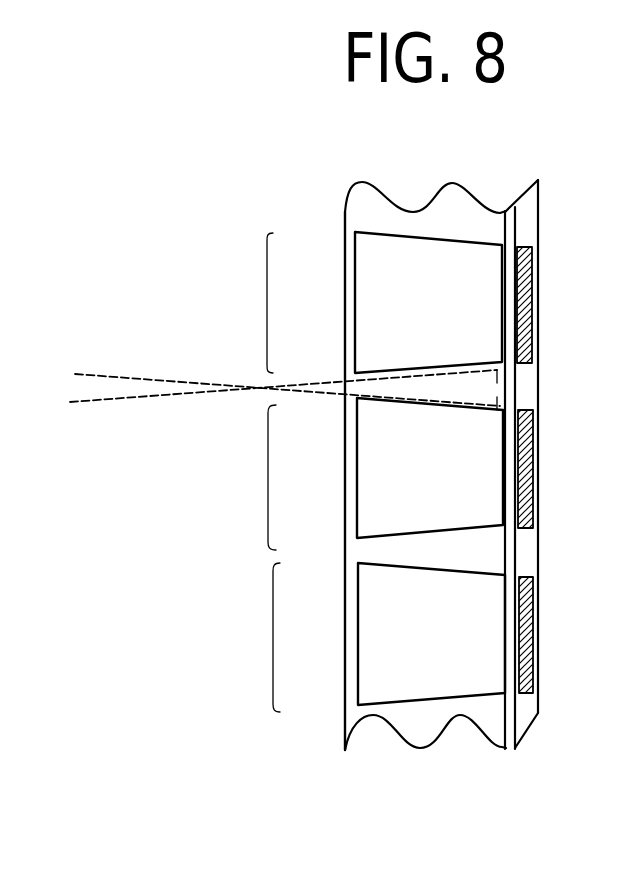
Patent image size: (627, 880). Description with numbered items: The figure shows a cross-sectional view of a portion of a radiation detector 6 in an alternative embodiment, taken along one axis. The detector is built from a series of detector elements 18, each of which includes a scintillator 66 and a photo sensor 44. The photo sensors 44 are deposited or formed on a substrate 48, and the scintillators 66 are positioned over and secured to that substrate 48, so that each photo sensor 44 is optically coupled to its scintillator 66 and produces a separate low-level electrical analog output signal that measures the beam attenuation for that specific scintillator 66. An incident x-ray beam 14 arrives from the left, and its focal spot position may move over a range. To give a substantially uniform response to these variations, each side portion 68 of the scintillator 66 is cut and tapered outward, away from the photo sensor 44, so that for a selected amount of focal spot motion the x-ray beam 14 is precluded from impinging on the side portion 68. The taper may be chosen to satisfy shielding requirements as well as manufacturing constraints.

The radiation detector 6 is at (278, 752).
The x-ray beam 14 is at (148, 382).
The detector element 18 is at (266, 300).
The photo sensor 44 is at (533, 305).
The substrate 48 is at (532, 727).
The scintillator 66 is at (345, 306).
The side portion 68 is at (497, 370).